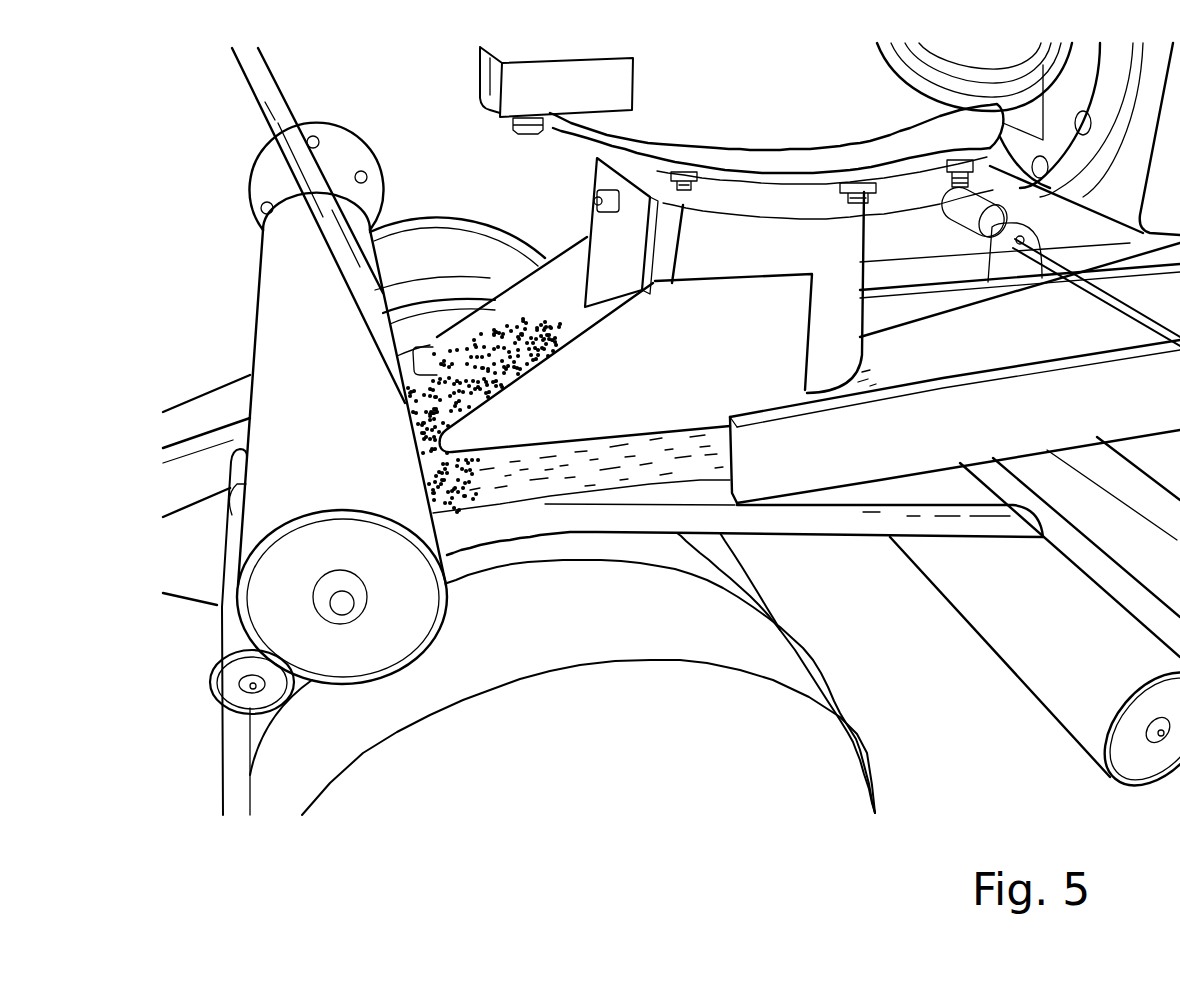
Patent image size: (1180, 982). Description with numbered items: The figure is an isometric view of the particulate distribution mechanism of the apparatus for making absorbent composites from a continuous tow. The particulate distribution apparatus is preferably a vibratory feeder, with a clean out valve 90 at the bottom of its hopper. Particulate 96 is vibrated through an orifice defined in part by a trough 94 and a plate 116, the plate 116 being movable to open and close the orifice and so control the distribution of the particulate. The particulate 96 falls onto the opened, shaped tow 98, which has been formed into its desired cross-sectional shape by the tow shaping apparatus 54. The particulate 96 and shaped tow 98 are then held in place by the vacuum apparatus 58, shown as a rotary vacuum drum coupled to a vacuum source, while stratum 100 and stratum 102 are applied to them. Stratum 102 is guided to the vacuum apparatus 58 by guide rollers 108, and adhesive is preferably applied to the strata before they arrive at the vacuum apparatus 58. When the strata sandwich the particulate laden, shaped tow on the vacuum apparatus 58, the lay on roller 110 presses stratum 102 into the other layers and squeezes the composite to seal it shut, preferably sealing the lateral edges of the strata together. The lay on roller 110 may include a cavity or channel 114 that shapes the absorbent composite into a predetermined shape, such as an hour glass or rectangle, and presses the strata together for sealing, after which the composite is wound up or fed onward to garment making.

The tow shaping apparatus 54 is at (1056, 422).
The vacuum apparatus 58 is at (582, 759).
The clean out valve 90 is at (890, 58).
The trough 94 is at (697, 371).
The particulate 96 is at (437, 347).
The opened tow 98 is at (610, 477).
The stratum 100 is at (808, 518).
The stratum 102 is at (263, 82).
The guide rollers 108 is at (325, 481).
The lay on roller 110 is at (227, 630).
The channel 114 is at (233, 537).
The plate 116 is at (630, 271).